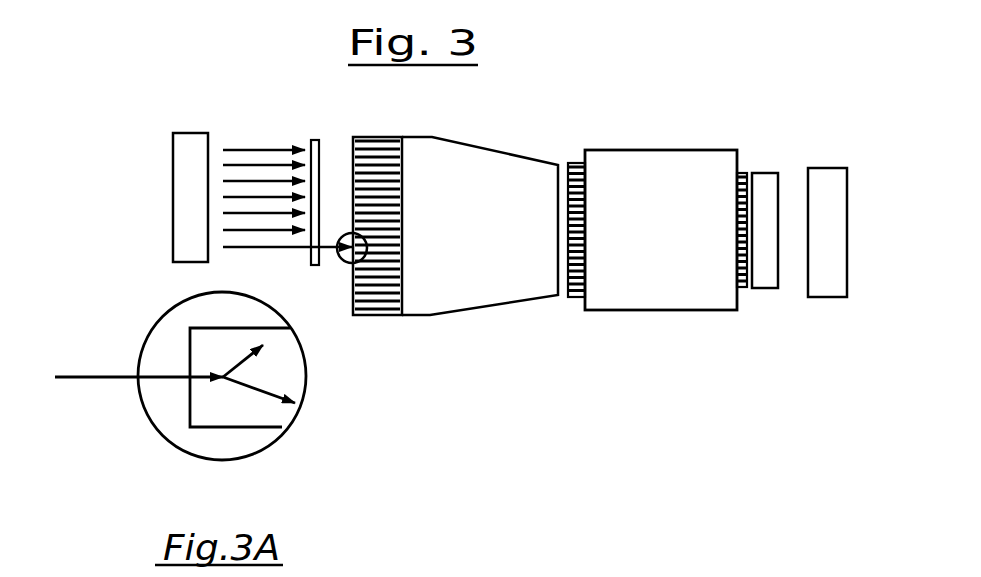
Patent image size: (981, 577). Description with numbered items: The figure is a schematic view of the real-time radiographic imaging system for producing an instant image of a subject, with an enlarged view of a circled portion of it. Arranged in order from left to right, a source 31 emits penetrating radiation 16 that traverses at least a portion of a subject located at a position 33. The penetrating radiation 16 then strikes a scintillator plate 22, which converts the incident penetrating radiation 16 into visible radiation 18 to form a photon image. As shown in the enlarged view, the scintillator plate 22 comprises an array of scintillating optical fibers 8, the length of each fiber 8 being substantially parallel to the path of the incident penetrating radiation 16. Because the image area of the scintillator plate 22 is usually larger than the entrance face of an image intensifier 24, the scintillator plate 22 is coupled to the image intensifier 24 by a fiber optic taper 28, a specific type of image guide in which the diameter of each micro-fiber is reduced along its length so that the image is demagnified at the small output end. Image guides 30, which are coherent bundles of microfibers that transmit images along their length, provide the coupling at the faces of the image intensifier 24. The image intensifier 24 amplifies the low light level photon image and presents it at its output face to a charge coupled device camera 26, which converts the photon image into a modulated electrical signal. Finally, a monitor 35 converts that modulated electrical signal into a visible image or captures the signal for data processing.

In FIG. 3A, the scintillating optical fiber 8 is at (215, 425).
In FIG. 3, the penetrating radiation 16 is at (222, 188).
In FIG. 3A, the penetrating radiation 16 is at (115, 375).
In FIG. 3A, the visible radiation 18 is at (258, 410).
In FIG. 3, the scintillator plate 22 is at (368, 135).
In FIG. 3, the image intensifier 24 is at (662, 187).
In FIG. 3, the charge coupled device camera 26 is at (777, 217).
In FIG. 3, the fiber optic taper 28 is at (527, 262).
In FIG. 3, the image guide 30 is at (577, 298).
In FIG. 3, the source of penetrating radiation 31 is at (185, 147).
In FIG. 3, the position 33 is at (310, 142).
In FIG. 3, the monitor 35 is at (827, 298).